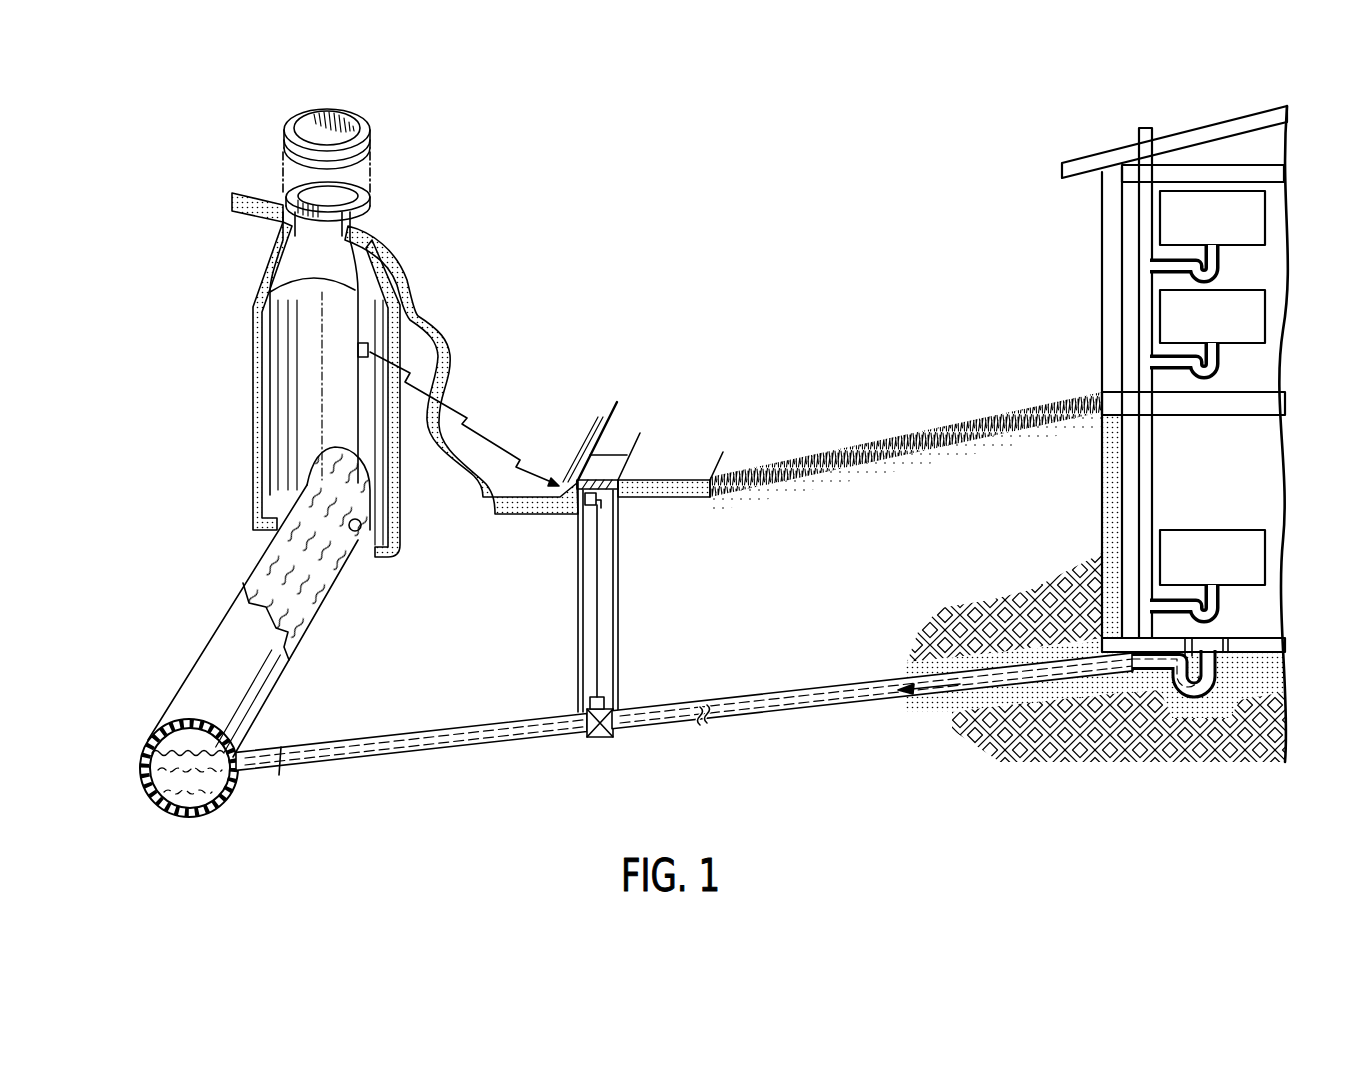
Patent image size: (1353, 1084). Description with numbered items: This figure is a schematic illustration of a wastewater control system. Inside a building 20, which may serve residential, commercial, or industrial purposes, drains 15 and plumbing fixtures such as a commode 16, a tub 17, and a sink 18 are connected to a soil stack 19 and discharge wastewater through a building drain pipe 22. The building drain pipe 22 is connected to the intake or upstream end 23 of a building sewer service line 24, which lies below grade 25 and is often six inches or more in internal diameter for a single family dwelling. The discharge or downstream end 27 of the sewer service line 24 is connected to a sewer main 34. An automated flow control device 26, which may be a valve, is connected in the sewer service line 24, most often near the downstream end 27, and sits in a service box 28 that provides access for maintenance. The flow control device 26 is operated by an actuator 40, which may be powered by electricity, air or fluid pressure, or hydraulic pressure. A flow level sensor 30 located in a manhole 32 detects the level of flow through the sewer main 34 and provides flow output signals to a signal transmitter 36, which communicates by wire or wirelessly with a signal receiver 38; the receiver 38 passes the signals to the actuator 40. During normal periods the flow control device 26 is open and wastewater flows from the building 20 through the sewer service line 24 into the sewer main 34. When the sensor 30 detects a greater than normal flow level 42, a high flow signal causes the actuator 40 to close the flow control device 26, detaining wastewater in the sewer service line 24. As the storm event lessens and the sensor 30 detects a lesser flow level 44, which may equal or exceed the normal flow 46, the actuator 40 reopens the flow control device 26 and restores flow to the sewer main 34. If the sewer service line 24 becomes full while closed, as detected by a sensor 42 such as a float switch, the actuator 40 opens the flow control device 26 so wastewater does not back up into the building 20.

The drains 15 is at (1226, 638).
The commode 16 is at (1265, 217).
The tub 17 is at (1265, 314).
The sink 18 is at (1265, 568).
The soil stack 19 is at (1152, 488).
The building 20 is at (1102, 280).
The building drain pipe 22 is at (1195, 700).
The intake or upstream end 23 is at (1113, 672).
The building sewer service line 24 is at (782, 710).
The grade 25 is at (862, 432).
The automated flow control device 26 is at (600, 737).
The discharge or downstream end 27 is at (450, 745).
The service box 28 is at (618, 595).
The flow level sensor 30 is at (366, 548).
The manhole 32 is at (253, 318).
The sewer main 34 is at (143, 760).
The signal transmitter 36 is at (359, 346).
The signal receiver 38 is at (584, 510).
The actuator 40 is at (586, 709).
The greater than normal flow level 42 is at (199, 752).
The lesser flow level 44 is at (150, 782).
The normal flow 46 is at (176, 813).